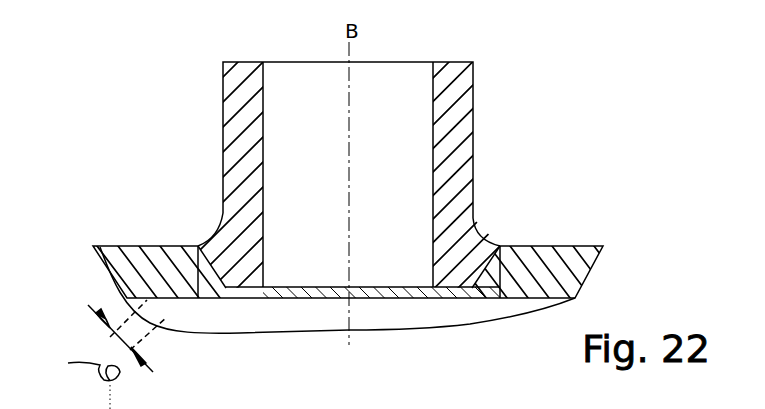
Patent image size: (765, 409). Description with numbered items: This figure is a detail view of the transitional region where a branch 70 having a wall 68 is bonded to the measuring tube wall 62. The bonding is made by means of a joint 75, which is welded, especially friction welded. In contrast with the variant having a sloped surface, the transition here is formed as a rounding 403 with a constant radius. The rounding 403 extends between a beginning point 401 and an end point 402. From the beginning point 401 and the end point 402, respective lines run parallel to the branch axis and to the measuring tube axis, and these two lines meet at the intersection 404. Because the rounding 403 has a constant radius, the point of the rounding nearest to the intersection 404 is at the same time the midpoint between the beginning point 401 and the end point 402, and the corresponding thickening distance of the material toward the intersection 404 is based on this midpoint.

The measuring tube wall 62 is at (107, 268).
The wall 68 is at (247, 128).
The branch 70 is at (455, 113).
The joint 75 is at (500, 299).
The beginning point 401 is at (197, 246).
The end point 402 is at (223, 214).
The rounding 403 is at (220, 252).
The intersection 404 is at (240, 300).